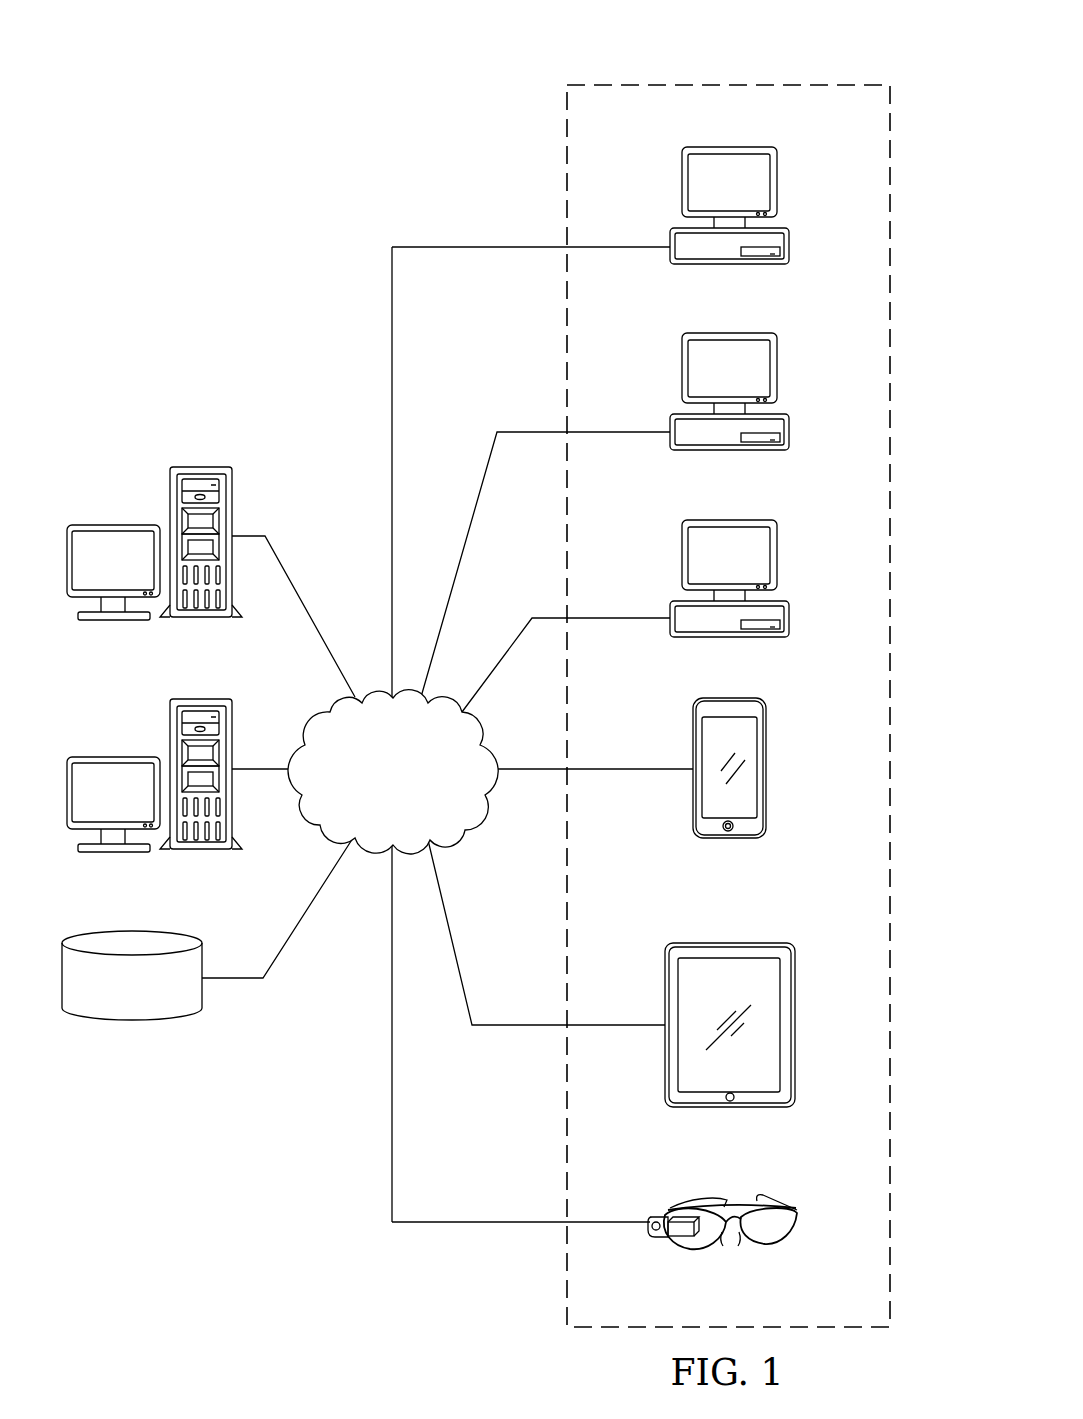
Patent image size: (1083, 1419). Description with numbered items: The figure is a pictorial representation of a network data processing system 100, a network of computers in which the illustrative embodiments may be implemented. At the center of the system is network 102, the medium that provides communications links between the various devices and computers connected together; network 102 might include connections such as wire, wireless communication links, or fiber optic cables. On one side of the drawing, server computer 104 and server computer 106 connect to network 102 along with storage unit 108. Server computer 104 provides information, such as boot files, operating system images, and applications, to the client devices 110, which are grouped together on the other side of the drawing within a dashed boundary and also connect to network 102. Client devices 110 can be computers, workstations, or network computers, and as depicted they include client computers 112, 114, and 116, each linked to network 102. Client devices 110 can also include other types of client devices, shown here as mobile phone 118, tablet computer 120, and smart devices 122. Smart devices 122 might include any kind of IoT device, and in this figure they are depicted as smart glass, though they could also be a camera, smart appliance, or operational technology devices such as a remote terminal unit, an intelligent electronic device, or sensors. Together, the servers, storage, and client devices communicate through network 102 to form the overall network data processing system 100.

The network data processing system 100 is at (245, 151).
The network 102 is at (371, 803).
The server computer 104 is at (113, 524).
The server computer 106 is at (113, 756).
The storage unit 108 is at (130, 1021).
The client devices 110 is at (797, 82).
The client computer 112 is at (777, 186).
The client computer 114 is at (777, 372).
The client computer 116 is at (777, 559).
The mobile phone 118 is at (766, 787).
The tablet computer 120 is at (795, 1037).
The smart devices 122 is at (797, 1226).